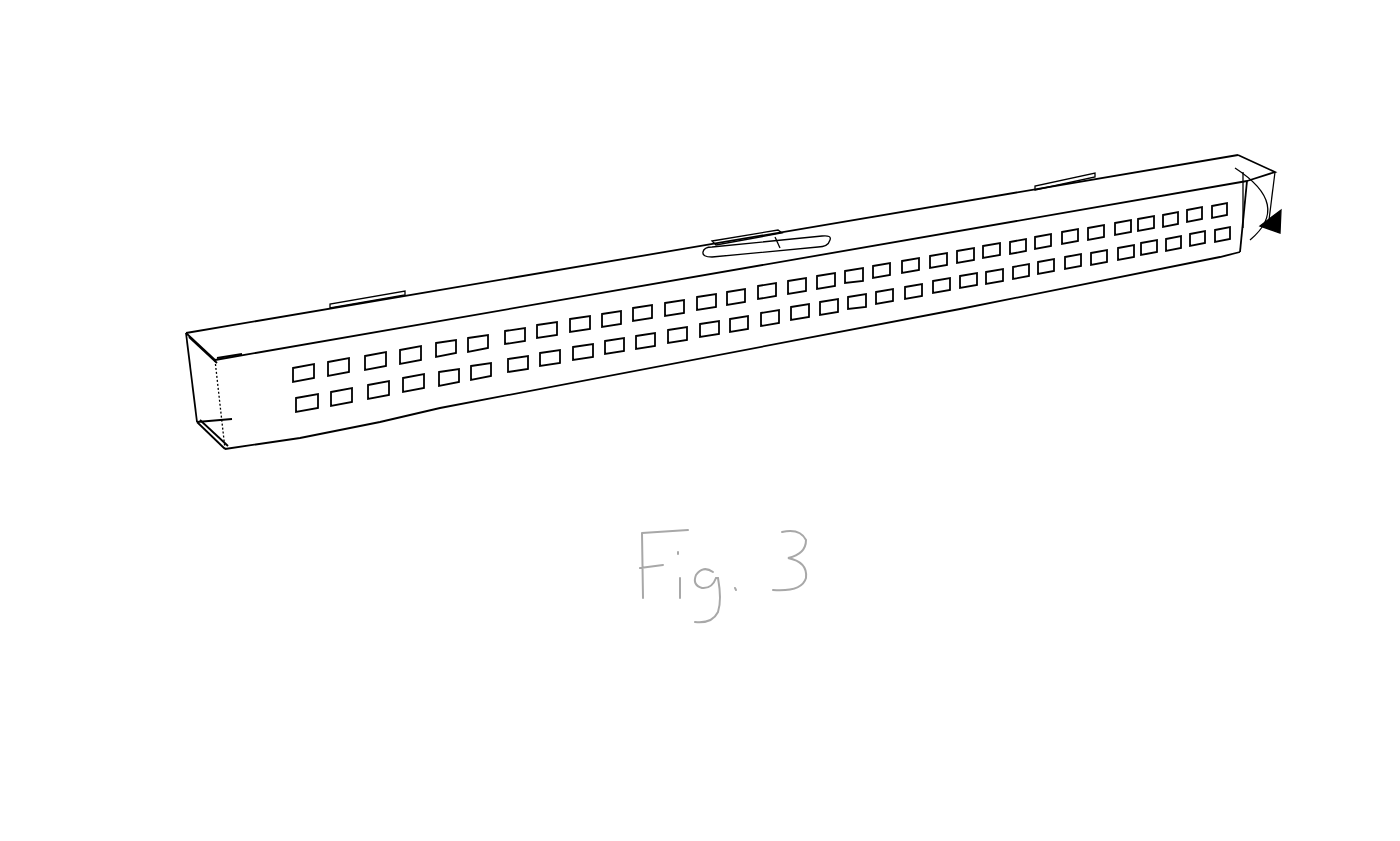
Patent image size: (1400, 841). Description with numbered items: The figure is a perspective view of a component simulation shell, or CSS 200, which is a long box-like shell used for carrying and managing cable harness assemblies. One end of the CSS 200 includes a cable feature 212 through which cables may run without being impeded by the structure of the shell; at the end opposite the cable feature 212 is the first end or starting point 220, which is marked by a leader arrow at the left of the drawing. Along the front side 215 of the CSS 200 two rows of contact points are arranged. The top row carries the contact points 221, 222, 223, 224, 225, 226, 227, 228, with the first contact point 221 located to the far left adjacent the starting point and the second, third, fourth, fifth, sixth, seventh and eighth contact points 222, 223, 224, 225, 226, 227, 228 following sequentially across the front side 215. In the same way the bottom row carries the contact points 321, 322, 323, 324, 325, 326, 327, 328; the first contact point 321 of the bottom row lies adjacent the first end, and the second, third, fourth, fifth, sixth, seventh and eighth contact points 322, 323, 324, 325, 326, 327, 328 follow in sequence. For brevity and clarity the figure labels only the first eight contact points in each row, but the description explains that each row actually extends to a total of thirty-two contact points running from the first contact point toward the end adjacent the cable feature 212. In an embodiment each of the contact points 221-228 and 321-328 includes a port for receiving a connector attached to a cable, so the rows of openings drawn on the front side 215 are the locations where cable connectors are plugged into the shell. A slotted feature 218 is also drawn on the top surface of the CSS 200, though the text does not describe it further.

The component simulation shell 200 is at (847, 197).
The cable feature 212 is at (1283, 221).
The front side 215 is at (1240, 157).
The top slot 218 is at (707, 243).
The first end or starting point 220 is at (150, 378).
The first contact point 221 is at (1253, 193).
The second contact point 222 is at (1195, 209).
The third contact point 223 is at (1170, 213).
The fourth contact point 224 is at (1145, 218).
The fifth contact point 225 is at (1095, 226).
The sixth contact point 226 is at (1070, 231).
The seventh contact point 227 is at (1043, 236).
The eighth contact point 228 is at (1017, 240).
The first contact point 321 is at (1222, 239).
The second contact point 322 is at (1196, 243).
The third contact point 323 is at (1172, 248).
The fourth contact point 324 is at (1148, 253).
The fifth contact point 325 is at (1125, 258).
The sixth contact point 326 is at (1098, 263).
The seventh contact point 327 is at (1072, 268).
The eighth contact point 328 is at (1045, 274).